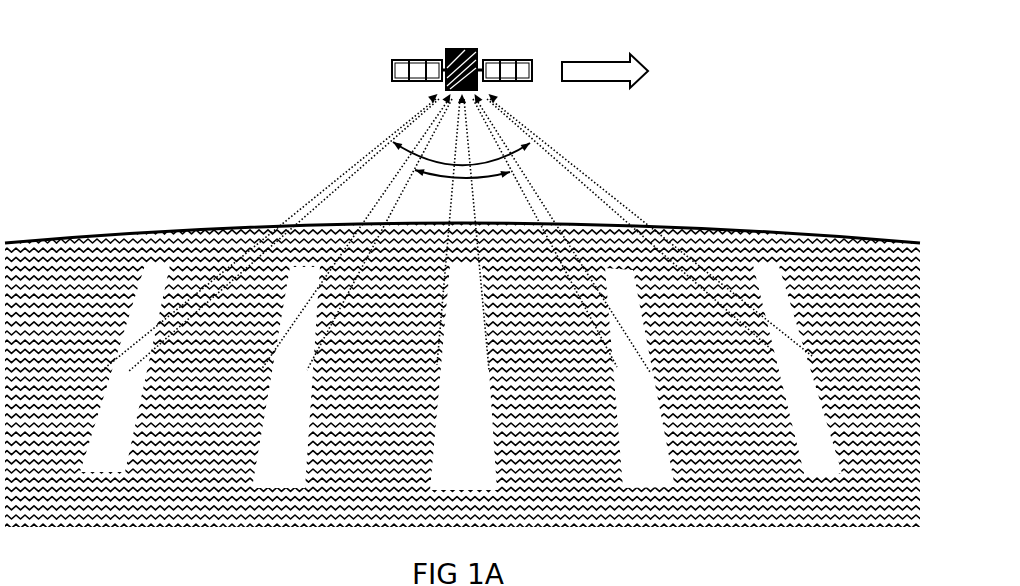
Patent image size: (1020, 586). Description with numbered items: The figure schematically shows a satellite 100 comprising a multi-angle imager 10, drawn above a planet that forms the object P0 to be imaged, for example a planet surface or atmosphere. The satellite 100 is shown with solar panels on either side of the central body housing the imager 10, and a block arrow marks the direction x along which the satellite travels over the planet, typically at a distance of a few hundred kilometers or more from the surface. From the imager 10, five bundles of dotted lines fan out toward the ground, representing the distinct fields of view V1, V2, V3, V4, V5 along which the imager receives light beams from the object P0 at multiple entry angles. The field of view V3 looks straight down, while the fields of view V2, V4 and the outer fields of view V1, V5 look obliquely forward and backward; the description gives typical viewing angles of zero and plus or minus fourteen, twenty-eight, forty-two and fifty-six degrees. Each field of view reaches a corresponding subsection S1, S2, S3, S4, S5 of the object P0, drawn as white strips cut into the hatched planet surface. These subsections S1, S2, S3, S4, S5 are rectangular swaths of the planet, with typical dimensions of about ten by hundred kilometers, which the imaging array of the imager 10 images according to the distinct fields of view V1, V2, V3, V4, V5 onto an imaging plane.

The satellite 100 is at (409, 50).
The imager 10 is at (471, 69).
The direction of travel x is at (621, 71).
The object P0 is at (112, 204).
The field of view V1 is at (649, 225).
The field of view V2 is at (561, 233).
The field of view V3 is at (463, 232).
The field of view V4 is at (356, 232).
The field of view V5 is at (269, 233).
The subsection S1 is at (810, 385).
The subsection S2 is at (649, 392).
The subsection S3 is at (475, 395).
The subsection S4 is at (304, 391).
The subsection S5 is at (144, 383).